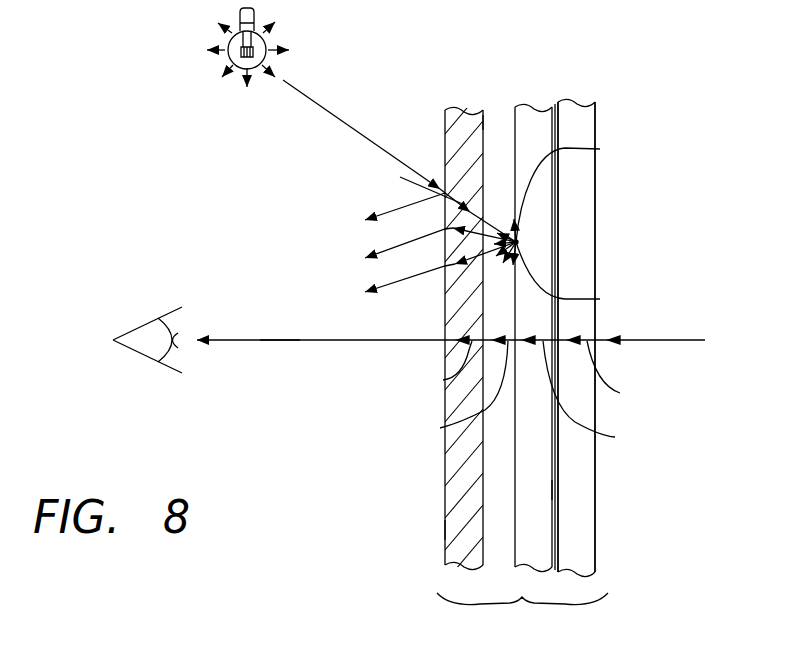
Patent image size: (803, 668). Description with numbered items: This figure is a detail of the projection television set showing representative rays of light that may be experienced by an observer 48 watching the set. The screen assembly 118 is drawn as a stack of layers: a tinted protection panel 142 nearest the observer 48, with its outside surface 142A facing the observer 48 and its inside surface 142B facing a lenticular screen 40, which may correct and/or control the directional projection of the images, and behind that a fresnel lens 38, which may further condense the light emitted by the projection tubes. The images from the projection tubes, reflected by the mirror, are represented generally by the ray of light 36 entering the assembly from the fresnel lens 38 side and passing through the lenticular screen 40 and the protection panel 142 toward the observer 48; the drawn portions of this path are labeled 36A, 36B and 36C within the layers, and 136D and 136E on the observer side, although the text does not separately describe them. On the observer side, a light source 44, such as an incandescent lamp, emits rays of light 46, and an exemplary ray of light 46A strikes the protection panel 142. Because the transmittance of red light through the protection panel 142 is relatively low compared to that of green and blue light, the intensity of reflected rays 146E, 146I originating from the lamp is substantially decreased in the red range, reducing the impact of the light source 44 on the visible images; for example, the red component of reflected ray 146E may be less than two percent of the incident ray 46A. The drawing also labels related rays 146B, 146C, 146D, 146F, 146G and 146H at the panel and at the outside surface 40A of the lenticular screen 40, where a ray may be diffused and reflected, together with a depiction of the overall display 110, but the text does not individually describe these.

The ray of light 36 is at (673, 340).
The ambient light portion 36A is at (620, 393).
The ambient light portion 36B is at (615, 437).
The ambient light portion 36C is at (440, 428).
The fresnel lens 38 is at (575, 100).
The lenticular screen 40 is at (534, 105).
The outside surface of the lenticular screen 40A is at (520, 490).
The light source 44 is at (230, 42).
The rays of light 46 is at (285, 52).
The ray of light 46A is at (318, 105).
The observer 48 is at (147, 320).
The display 110 is at (343, 463).
The screen assembly 118 is at (522, 614).
The transmitted light 136D is at (443, 380).
The transmitted light toward viewer 136E is at (282, 341).
The protection panel 142 is at (458, 107).
The outside surface of the protection panel 142A is at (446, 528).
The inside surface of the protection panel 142B is at (485, 120).
The refracted light ray 146B is at (452, 200).
The reflected light ray 146C is at (385, 213).
The light ray 146D is at (400, 177).
The reflected ray 146E is at (385, 253).
The scattered light ray 146F is at (600, 149).
The scattered light ray 146G is at (600, 299).
The scattered light 146H is at (458, 296).
The reflected ray 146I is at (385, 287).